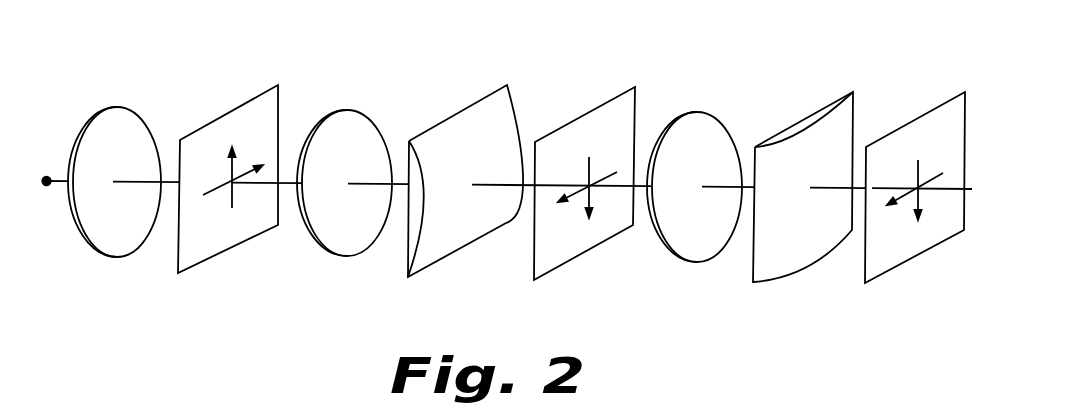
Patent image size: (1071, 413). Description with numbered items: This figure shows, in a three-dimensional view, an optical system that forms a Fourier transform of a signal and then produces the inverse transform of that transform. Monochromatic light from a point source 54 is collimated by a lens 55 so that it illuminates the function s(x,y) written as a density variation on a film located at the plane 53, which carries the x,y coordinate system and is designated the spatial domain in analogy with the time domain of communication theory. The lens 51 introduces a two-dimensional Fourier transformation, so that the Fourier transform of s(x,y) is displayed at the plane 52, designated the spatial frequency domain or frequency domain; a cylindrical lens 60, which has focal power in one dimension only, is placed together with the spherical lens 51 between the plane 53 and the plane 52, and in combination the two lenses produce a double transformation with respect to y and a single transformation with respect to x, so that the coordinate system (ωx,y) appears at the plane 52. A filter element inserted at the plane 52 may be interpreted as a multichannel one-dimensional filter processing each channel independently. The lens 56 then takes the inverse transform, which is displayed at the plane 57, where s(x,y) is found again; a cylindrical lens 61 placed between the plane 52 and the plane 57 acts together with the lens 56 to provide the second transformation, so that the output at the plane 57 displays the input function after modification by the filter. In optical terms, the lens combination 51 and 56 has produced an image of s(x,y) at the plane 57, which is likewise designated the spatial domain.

The point source 54 is at (48, 172).
The lens 55 is at (122, 107).
The plane 53 is at (217, 118).
The lens 51 is at (342, 110).
The cylindrical lens 60 is at (434, 124).
The plane 52 is at (570, 120).
The lens 56 is at (693, 112).
The cylindrical lens 61 is at (797, 120).
The plane 57 is at (903, 125).